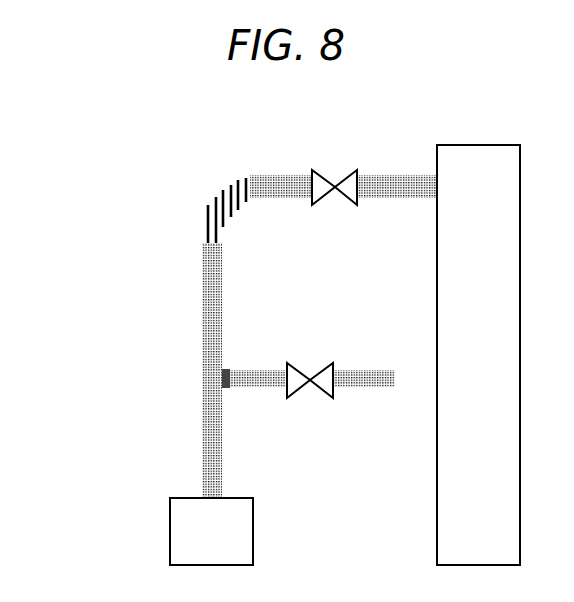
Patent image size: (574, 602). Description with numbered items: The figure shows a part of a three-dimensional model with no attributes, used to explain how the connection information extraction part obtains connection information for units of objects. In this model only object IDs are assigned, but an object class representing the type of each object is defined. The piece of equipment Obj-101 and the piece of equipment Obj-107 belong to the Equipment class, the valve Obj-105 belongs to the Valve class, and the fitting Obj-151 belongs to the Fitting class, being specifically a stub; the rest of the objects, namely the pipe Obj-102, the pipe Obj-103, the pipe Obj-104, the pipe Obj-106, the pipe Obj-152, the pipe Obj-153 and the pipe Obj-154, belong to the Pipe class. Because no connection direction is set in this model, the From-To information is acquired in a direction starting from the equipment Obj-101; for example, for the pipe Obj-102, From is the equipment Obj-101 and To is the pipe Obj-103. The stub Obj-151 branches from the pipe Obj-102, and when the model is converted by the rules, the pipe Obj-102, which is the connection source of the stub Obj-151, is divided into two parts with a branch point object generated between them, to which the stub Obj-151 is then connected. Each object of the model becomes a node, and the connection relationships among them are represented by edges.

The Obj- 101 is at (170, 543).
The Obj- 102 is at (205, 468).
The Obj- 103 is at (208, 207).
The Obj- 104 is at (286, 177).
The Obj- 105 is at (328, 200).
The Obj- 106 is at (397, 177).
The Obj- 107 is at (493, 145).
The Obj- 151 is at (226, 369).
The Obj- 152 is at (243, 387).
The Obj- 153 is at (303, 365).
The Obj- 154 is at (353, 387).